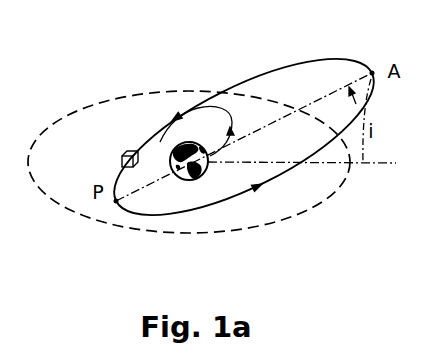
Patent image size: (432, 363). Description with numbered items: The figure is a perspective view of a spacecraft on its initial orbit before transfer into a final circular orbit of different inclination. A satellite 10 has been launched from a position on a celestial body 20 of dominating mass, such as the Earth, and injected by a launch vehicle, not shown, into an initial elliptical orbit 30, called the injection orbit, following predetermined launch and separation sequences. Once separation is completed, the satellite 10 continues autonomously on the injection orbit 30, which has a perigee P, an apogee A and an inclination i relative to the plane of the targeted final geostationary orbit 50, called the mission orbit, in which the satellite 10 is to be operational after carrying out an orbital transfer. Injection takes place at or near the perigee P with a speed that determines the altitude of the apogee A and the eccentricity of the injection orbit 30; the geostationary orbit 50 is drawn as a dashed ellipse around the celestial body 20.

The satellite 10 is at (120, 159).
The celestial body 20 is at (207, 174).
The initial elliptical orbit 30 is at (299, 61).
The final geostationary orbit 50 is at (97, 100).